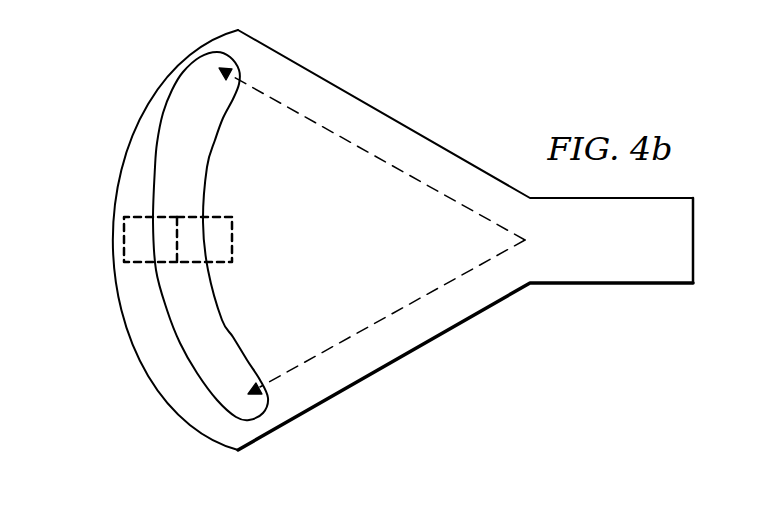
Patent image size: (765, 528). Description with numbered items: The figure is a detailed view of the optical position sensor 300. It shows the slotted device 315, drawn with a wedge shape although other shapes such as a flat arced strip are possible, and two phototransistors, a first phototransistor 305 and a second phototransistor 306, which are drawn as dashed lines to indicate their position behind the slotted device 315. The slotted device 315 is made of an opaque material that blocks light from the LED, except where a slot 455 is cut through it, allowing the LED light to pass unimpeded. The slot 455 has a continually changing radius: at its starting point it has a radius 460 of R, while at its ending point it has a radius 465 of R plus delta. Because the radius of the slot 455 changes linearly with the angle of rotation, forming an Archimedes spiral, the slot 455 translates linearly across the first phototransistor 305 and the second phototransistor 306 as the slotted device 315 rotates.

The optical position sensor 300 is at (372, 240).
The slotted device 315 is at (384, 113).
The phototransistor PT1 305 is at (124, 241).
The phototransistor PT2 306 is at (233, 242).
The slot 455 is at (230, 332).
The radius R+Δ 465 is at (415, 175).
The radius R 460 is at (433, 292).